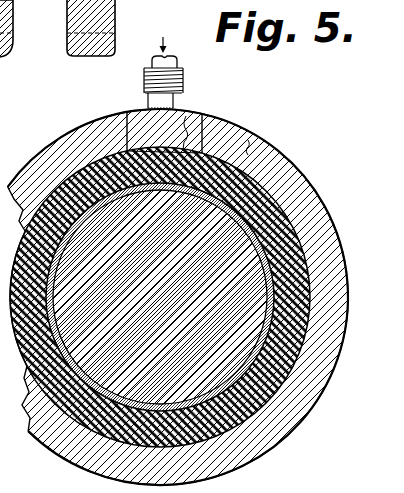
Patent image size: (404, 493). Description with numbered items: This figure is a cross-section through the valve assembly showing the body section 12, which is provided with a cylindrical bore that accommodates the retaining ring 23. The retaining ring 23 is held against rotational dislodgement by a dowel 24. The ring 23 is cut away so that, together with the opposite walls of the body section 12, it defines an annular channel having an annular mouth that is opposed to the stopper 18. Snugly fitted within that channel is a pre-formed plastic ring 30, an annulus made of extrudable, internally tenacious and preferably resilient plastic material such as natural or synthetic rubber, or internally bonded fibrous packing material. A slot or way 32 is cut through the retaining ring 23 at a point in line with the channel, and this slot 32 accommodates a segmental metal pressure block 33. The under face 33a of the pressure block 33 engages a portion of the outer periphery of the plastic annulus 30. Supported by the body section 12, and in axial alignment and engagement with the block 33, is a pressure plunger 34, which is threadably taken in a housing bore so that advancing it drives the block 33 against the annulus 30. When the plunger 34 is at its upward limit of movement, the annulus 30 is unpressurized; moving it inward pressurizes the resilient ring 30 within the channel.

The body section 12 is at (296, 418).
The stopper 18 is at (300, 183).
The retaining ring 23 is at (272, 157).
The dowel 24 is at (19, 0).
The plastic ring 30 is at (249, 147).
The slot 32 is at (207, 120).
The pressure block 33 is at (134, 118).
The under face 33a is at (185, 128).
The pressure plunger 34 is at (165, 100).